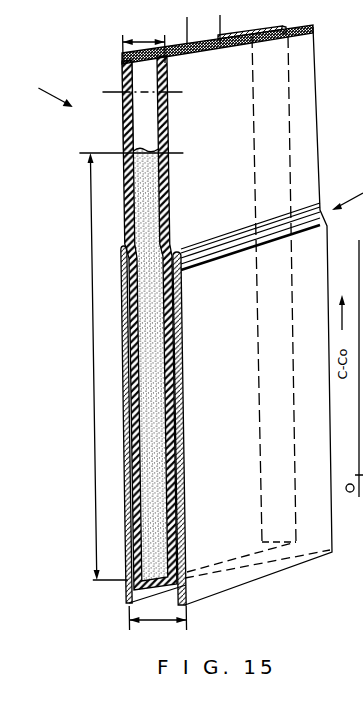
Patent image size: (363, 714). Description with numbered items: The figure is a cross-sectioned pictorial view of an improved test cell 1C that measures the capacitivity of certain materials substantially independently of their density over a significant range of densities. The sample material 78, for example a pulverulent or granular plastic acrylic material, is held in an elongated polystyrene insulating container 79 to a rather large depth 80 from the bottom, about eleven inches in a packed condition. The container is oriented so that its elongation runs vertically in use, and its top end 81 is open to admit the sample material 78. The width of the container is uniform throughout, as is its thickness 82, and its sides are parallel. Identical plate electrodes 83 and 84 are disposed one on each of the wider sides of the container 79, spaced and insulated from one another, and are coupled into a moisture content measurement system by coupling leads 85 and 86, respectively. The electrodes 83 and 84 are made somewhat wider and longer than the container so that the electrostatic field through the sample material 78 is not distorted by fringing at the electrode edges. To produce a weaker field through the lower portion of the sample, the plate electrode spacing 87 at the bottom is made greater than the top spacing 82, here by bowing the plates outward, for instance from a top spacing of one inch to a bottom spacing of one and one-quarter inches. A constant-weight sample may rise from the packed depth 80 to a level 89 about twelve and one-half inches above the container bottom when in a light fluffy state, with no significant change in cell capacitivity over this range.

The test cell 1C is at (50, 85).
The sample material 78 is at (146, 218).
The polystyrene insulating container 79 is at (134, 487).
The depth 80 is at (91, 366).
The top end 81 is at (145, 66).
The thickness 82 is at (148, 41).
The plate electrode 83 is at (124, 127).
The plate electrode 84 is at (226, 193).
The coupling lead 85 is at (187, 27).
The coupling lead 86 is at (286, 28).
The plate electrode spacing 87 is at (144, 622).
The level 89 is at (105, 92).